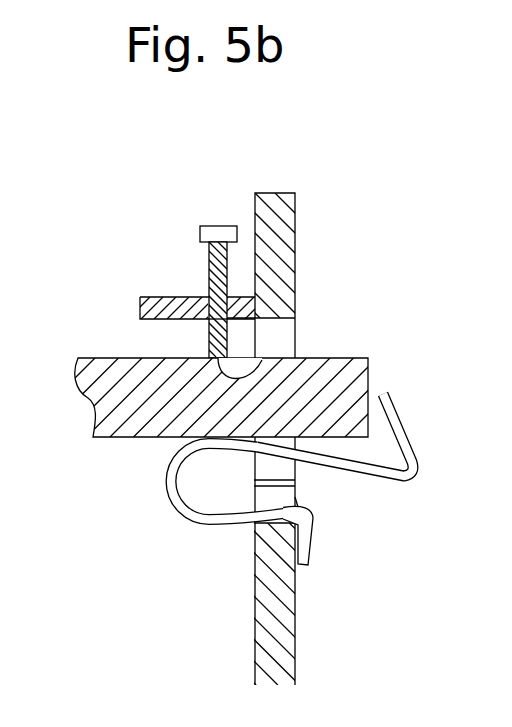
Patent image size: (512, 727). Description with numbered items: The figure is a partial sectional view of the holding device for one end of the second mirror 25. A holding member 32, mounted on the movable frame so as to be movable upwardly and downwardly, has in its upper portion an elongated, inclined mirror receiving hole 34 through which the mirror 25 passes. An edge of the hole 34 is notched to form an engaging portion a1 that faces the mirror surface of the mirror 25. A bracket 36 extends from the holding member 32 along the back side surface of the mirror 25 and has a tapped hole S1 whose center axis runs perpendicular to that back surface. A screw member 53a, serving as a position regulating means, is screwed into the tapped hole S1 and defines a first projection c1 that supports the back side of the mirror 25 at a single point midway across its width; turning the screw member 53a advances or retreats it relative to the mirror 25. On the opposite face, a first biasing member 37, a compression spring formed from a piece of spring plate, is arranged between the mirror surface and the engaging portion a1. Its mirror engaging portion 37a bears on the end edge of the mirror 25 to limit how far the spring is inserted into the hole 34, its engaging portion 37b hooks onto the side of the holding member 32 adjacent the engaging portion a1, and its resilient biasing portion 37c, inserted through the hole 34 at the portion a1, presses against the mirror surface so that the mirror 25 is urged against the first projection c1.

The holding member 32 is at (297, 218).
The mirror receiving hole 34 is at (296, 342).
The bracket 36 is at (142, 297).
The screw member 53a is at (208, 262).
The tapped hole S1 is at (207, 322).
The second mirror 25 is at (361, 357).
The first projection c1 is at (262, 360).
The first biasing member 37 is at (282, 502).
The mirror engaging portion 37a is at (400, 407).
The engaging portion 37b is at (310, 544).
The resilient biasing portion 37c is at (167, 483).
The engaging portion a1 is at (297, 498).